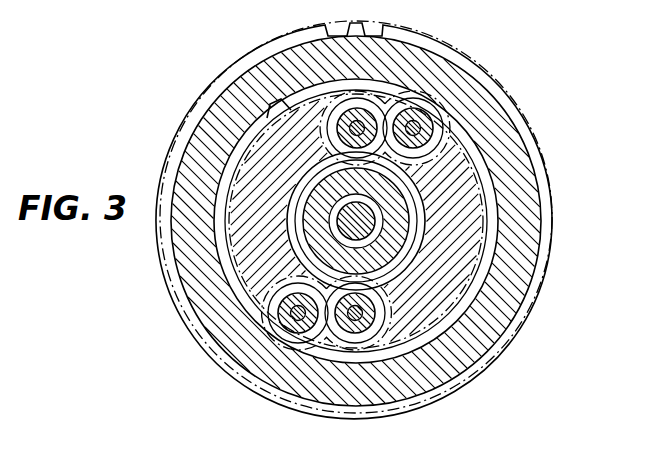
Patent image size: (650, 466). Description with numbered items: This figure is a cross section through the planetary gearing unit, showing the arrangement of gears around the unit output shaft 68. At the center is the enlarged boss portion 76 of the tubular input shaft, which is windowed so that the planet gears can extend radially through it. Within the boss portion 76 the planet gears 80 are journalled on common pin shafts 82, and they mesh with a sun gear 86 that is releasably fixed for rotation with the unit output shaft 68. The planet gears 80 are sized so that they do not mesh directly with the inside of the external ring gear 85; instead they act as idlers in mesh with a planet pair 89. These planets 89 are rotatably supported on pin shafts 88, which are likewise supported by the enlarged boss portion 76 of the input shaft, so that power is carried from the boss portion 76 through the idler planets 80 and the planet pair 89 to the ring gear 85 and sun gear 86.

The unit output shaft 68 is at (362, 236).
The central boss portion 76 is at (420, 248).
The planet gears 80 is at (273, 57).
The pin shafts 82 is at (351, 141).
The external ring gear 85 is at (522, 163).
The sun gear 86 is at (450, 321).
The pin shafts 88 is at (418, 125).
The planet pair 89 is at (462, 138).